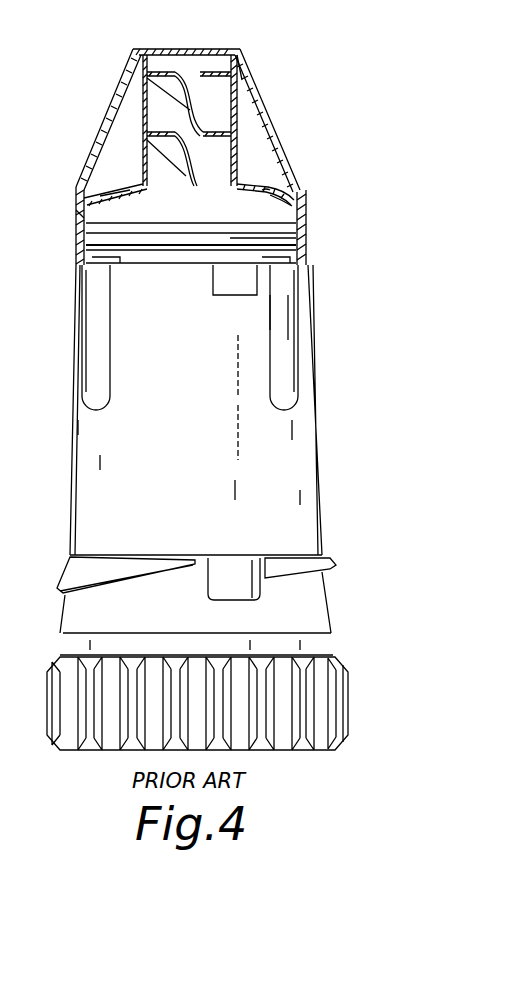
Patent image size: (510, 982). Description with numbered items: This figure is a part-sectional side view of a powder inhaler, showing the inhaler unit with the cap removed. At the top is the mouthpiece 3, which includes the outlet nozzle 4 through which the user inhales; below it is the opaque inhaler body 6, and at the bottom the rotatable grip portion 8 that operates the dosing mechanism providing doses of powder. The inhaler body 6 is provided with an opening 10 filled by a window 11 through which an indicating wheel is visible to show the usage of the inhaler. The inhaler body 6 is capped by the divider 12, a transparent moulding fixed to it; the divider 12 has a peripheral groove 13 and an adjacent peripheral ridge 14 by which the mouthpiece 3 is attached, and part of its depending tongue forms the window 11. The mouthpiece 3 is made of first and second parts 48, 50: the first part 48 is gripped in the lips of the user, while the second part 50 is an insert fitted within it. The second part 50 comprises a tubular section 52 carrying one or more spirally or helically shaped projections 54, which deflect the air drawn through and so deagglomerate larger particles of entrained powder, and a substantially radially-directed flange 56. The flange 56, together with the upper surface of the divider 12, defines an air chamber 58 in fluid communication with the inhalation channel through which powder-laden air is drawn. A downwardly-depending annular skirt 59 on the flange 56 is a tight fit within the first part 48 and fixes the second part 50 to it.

The mouthpiece 3 is at (82, 97).
The outlet nozzle 4 is at (212, 50).
The inhaler body 6 is at (288, 463).
The rotatable grip portion 8 is at (303, 760).
The opening 10 is at (240, 295).
The window 11 is at (250, 285).
The divider 12 is at (278, 240).
The peripheral groove 13 is at (84, 260).
The peripheral ridge 14 is at (84, 245).
The first part 48 is at (268, 110).
The second part 50 is at (275, 188).
The tubular section 52 is at (244, 80).
The spirally or helically shaped projections 54 is at (193, 82).
The radially-directed flange 56 is at (292, 206).
The air chamber 58 is at (147, 207).
The annular skirt 59 is at (84, 216).